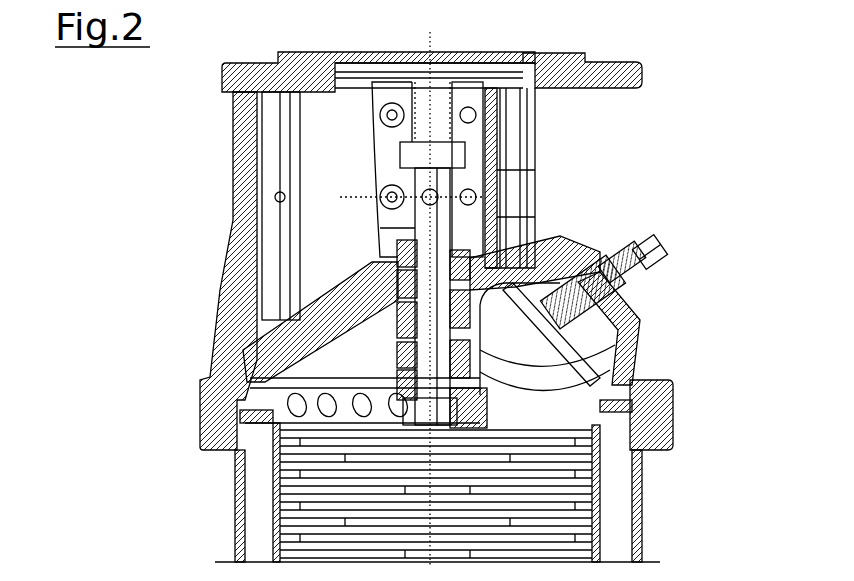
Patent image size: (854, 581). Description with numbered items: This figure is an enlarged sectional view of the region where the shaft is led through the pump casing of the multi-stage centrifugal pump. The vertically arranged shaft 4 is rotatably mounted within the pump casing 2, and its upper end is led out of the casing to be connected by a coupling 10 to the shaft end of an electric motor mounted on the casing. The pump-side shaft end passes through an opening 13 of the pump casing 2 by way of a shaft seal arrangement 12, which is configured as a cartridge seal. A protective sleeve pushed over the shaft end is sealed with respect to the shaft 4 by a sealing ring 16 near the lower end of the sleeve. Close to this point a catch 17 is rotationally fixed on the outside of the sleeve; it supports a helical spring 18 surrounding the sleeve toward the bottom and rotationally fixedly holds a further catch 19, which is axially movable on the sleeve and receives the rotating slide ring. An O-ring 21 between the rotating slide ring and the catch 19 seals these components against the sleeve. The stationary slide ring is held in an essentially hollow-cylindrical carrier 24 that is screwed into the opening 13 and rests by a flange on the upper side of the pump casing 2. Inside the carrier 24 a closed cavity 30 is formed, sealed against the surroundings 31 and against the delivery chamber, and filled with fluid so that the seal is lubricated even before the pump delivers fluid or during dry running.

The pump casing 2 is at (577, 363).
The shaft 4 is at (478, 232).
The coupling 10 is at (476, 166).
The shaft seal arrangement 12 is at (380, 238).
The opening 13 is at (398, 330).
The sealing ring 16 is at (667, 405).
The catch 17 is at (565, 385).
The helical spring 18 is at (405, 372).
The catch 19 is at (605, 320).
The O-ring 21 is at (393, 348).
The carrier 24 is at (545, 262).
The cavity 30 is at (388, 268).
The surroundings 31 is at (582, 94).